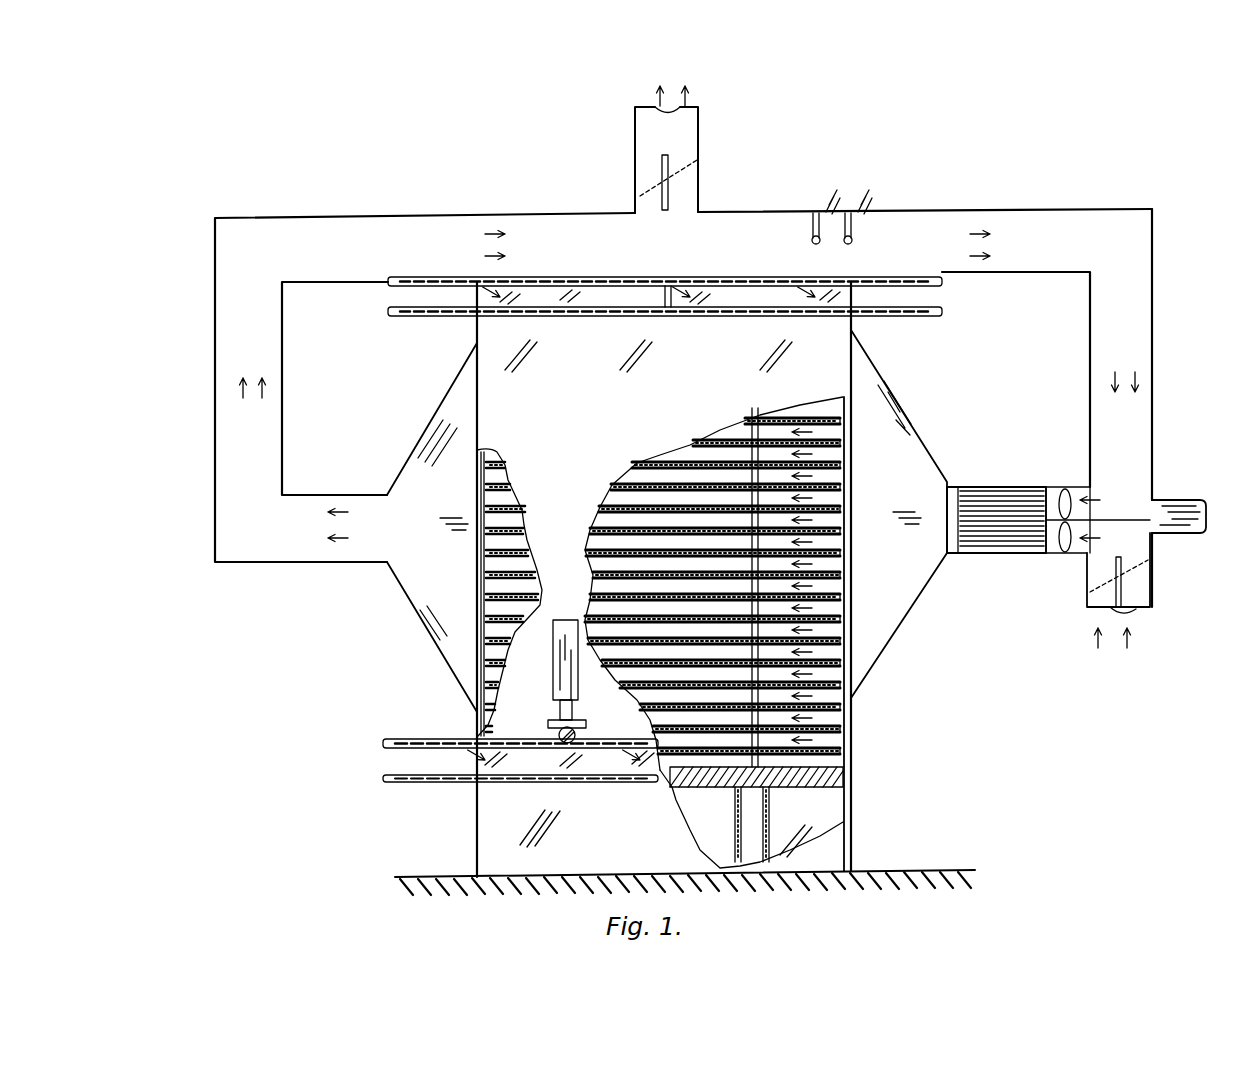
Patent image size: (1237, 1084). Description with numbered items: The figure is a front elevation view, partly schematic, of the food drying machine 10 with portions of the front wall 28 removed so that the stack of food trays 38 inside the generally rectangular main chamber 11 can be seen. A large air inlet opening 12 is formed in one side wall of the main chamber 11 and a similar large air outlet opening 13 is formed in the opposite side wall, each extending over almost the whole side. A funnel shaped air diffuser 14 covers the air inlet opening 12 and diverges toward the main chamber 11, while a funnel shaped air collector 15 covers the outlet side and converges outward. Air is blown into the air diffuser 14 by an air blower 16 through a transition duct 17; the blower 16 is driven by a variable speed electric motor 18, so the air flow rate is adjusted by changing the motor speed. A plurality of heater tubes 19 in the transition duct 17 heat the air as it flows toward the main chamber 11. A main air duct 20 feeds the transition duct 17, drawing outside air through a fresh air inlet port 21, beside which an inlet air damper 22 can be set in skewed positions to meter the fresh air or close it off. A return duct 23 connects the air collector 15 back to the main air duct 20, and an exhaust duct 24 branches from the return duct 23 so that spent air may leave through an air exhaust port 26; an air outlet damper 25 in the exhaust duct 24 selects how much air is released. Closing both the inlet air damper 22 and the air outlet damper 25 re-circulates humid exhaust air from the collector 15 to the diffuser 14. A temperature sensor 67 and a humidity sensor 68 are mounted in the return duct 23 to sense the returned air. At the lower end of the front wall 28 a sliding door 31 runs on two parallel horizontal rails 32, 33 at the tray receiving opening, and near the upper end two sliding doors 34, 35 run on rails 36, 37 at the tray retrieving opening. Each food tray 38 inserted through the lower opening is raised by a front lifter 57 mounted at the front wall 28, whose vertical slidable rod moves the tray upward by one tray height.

The food drying machine 10 is at (866, 709).
The main chamber 11 is at (846, 397).
The air inlet opening 12 is at (853, 595).
The air outlet opening 13 is at (477, 567).
The air diffuser 14 is at (888, 415).
The air collector 15 is at (420, 455).
The air blower 16 is at (1066, 488).
The transition duct 17 is at (950, 487).
The variable speed electric motor 18 is at (1192, 502).
The heater tubes 19 is at (1010, 552).
The main air duct 20 is at (1155, 293).
The fresh air inlet port 21 is at (1128, 615).
The inlet air damper 22 is at (1125, 578).
The return duct 23 is at (946, 217).
The exhaust duct 24 is at (700, 180).
The air outlet damper 25 is at (661, 172).
The air exhaust port 26 is at (698, 113).
The front wall 28 is at (497, 358).
The sliding door 31 is at (608, 781).
The horizontal rail 32 is at (433, 740).
The horizontal rail 33 is at (410, 783).
The sliding door 34 is at (790, 292).
The sliding door 35 is at (565, 292).
The horizontal rail 36 is at (655, 288).
The horizontal rail 37 is at (705, 317).
The food tray 38 is at (515, 511).
The front lifter 57 is at (569, 630).
The temperature sensor 67 is at (815, 225).
The humidity sensor 68 is at (855, 228).